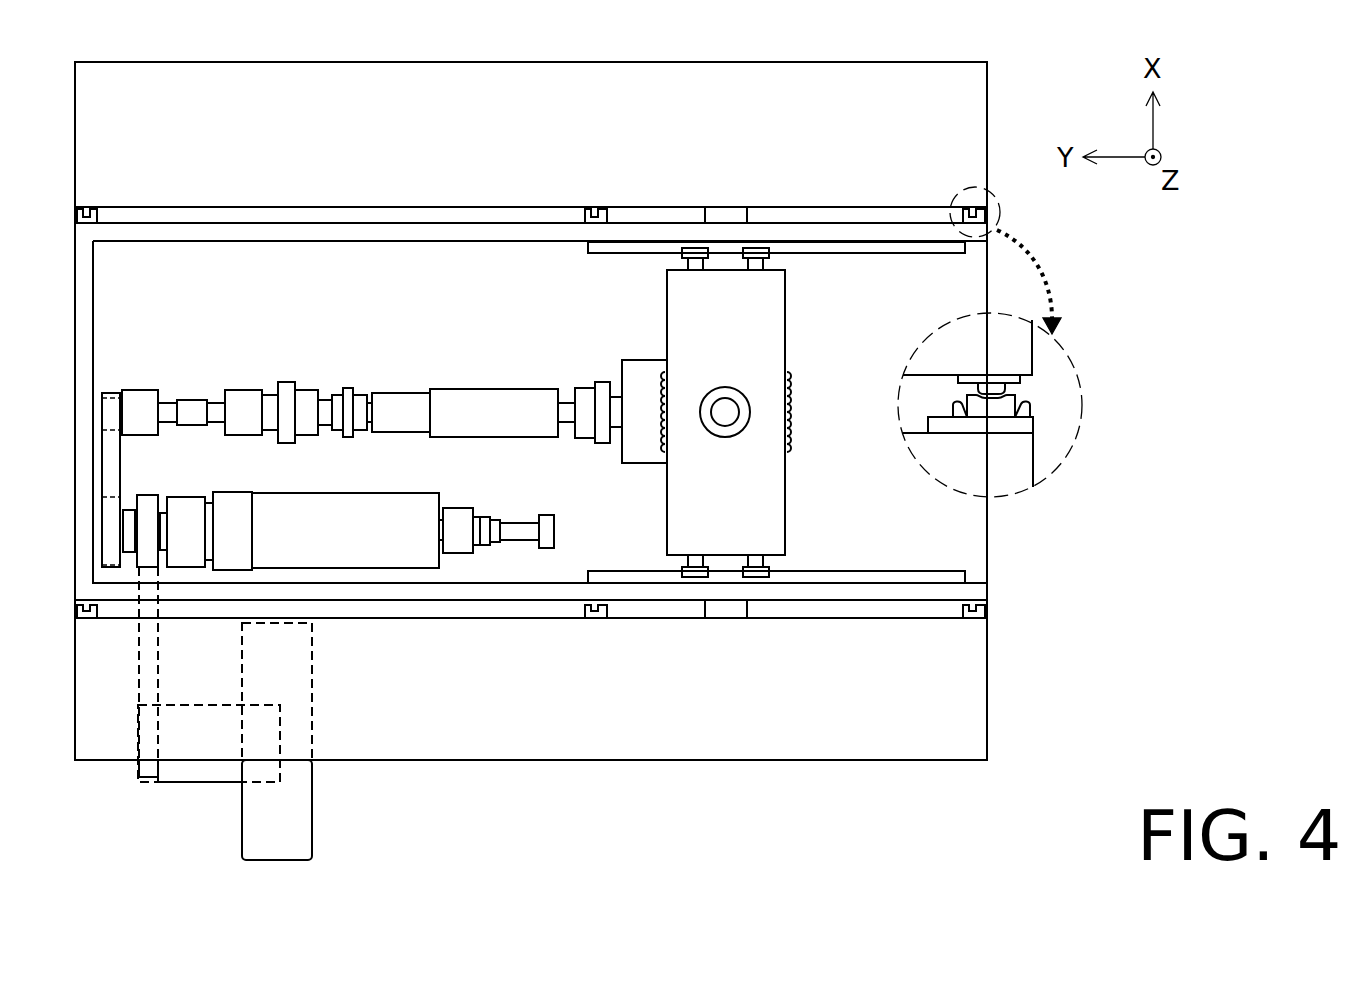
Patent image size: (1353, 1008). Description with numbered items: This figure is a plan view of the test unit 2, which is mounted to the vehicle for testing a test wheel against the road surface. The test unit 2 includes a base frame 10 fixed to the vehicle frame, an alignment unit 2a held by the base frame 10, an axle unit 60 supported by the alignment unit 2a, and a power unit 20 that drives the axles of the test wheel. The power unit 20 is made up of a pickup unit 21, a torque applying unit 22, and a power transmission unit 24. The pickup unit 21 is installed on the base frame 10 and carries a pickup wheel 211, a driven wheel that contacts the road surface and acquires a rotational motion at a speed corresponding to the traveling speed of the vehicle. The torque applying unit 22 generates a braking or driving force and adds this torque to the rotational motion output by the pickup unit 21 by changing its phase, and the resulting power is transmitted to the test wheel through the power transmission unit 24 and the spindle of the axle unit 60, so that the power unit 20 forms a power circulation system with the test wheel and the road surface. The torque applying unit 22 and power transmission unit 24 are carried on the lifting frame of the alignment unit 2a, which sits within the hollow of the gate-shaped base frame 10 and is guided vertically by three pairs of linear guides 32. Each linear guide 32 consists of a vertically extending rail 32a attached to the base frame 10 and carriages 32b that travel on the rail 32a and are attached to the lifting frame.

The test unit 2 is at (585, 449).
The alignment unit 2a is at (634, 336).
The base frame 10 is at (684, 762).
The power unit 20 is at (344, 586).
The pickup unit 21 is at (243, 682).
The pickup wheel 211 is at (238, 814).
The torque applying unit 22 is at (356, 578).
The power transmission unit 24 is at (250, 356).
The linear guide 32 is at (95, 211).
The rail 32a is at (992, 390).
The carriage 32b is at (1012, 406).
The axle unit 60 is at (637, 464).